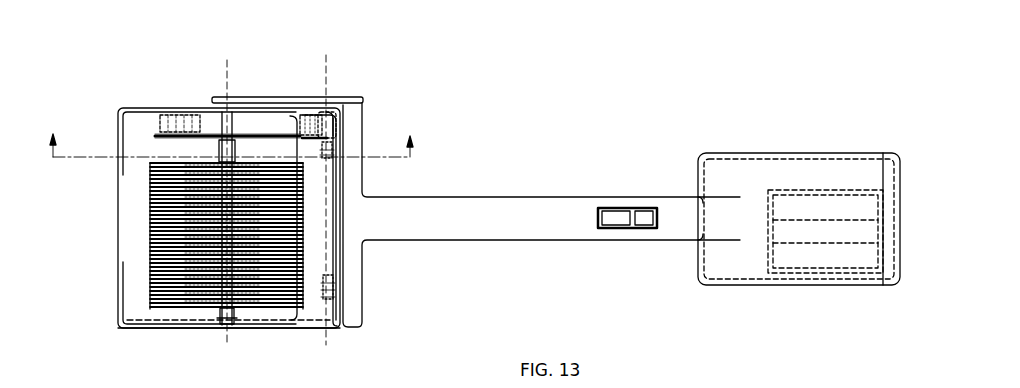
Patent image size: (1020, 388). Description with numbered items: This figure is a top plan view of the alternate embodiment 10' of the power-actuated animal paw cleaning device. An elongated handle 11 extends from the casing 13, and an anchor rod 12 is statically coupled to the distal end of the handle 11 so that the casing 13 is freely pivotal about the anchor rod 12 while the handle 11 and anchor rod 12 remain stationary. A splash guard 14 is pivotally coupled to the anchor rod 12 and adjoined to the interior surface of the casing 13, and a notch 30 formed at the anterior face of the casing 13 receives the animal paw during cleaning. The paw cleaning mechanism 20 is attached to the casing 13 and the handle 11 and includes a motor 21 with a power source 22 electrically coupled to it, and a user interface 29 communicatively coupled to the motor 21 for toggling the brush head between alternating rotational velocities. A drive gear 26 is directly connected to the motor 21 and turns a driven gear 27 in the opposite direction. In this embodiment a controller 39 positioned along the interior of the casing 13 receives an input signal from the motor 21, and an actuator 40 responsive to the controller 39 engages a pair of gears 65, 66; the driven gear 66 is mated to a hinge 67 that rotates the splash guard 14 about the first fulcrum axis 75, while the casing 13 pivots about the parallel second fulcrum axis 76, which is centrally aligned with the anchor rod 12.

The alternate embodiment 10' is at (468, 185).
The elongated handle 11 is at (500, 212).
The anchor rod 12 is at (226, 124).
The casing 13 is at (118, 298).
The splash guard 14 is at (357, 357).
The paw cleaning mechanism 20 is at (212, 60).
The motor 21 is at (162, 128).
The power source 22 is at (862, 257).
The drive gear 26 is at (165, 128).
The driven gear 27 is at (247, 125).
The user interface 29 is at (614, 222).
The notch 30 is at (118, 218).
The controller 39 is at (303, 113).
The actuator 40 is at (318, 122).
The gear 65 is at (308, 141).
The driven gear 66 is at (334, 126).
The hinge 67 is at (329, 148).
The first fulcrum axis 75 is at (330, 55).
The second fulcrum axis 76 is at (228, 58).